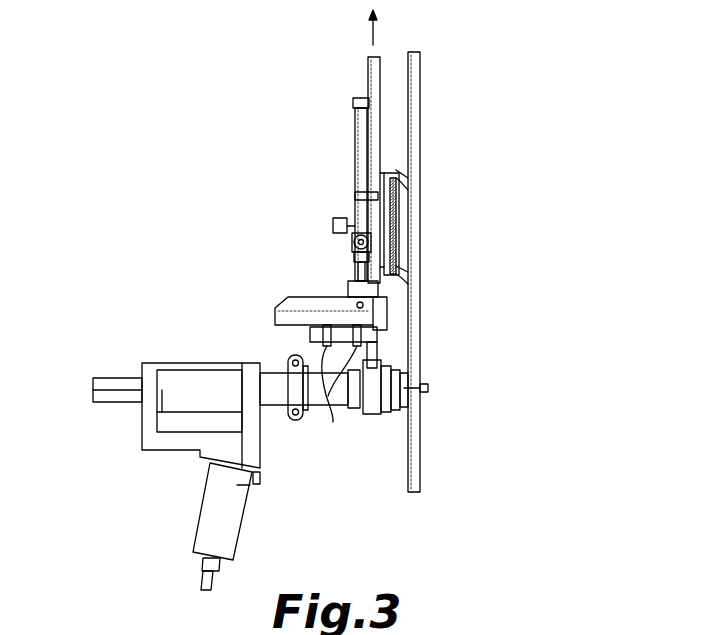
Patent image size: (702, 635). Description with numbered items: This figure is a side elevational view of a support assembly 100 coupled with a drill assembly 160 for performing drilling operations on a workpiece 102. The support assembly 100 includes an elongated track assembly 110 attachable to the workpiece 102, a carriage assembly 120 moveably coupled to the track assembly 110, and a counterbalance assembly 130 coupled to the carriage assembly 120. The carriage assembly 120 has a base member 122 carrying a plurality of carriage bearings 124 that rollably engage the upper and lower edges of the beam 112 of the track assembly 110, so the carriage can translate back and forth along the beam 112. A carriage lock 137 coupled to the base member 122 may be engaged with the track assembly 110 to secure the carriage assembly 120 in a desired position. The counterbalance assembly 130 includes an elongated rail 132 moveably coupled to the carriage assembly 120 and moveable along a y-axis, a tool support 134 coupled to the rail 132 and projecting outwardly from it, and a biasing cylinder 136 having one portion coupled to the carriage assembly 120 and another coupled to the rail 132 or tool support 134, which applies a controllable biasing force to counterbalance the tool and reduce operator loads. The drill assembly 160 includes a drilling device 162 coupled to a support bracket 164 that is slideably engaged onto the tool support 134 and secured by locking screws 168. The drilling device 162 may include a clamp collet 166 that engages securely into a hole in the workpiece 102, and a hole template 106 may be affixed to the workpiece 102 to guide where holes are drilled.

The support assembly 100 is at (546, 76).
The workpiece 102 is at (420, 456).
The hole template 106 is at (408, 470).
The track assembly 110 is at (420, 196).
The beam 112 is at (397, 236).
The carriage assembly 120 is at (395, 142).
The base member 122 is at (384, 173).
The carriage bearings 124 is at (398, 172).
The counterbalance assembly 130 is at (315, 82).
The rail 132 is at (378, 55).
The tool support 134 is at (280, 306).
The biasing cylinder 136 is at (355, 127).
The carriage lock 137 is at (333, 225).
The drill assembly 160 is at (126, 498).
The drilling device 162 is at (262, 453).
The support bracket 164 is at (310, 334).
The clamp collet 166 is at (425, 389).
The locking screws 168 is at (333, 422).